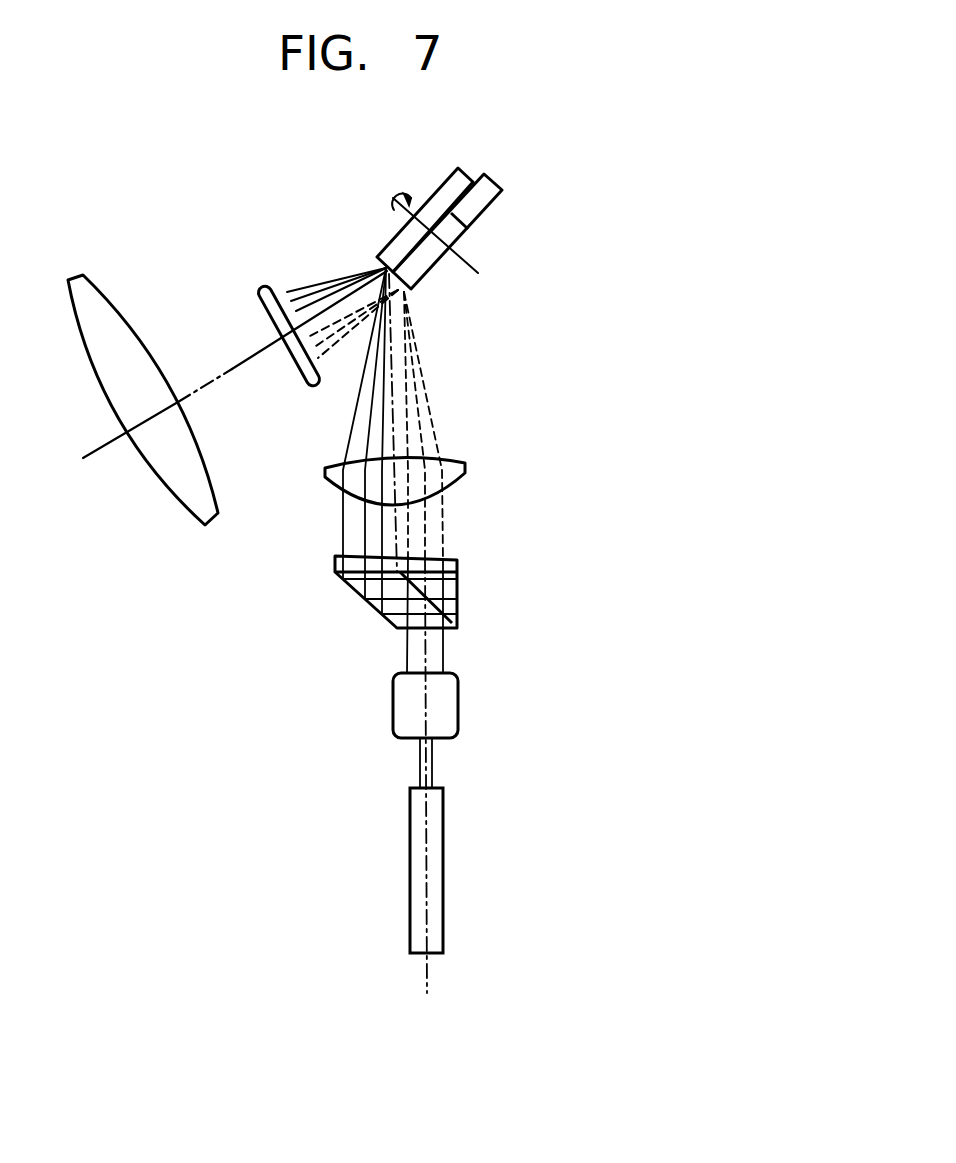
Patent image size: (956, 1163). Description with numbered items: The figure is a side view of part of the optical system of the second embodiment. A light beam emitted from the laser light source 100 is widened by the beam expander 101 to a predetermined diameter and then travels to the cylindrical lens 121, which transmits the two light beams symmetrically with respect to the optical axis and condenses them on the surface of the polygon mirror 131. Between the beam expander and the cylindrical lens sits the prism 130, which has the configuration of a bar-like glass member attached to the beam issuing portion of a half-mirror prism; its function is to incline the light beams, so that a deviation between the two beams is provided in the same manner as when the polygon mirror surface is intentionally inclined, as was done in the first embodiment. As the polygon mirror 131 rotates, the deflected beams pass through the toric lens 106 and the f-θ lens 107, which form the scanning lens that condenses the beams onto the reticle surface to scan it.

The laser light source 100 is at (435, 822).
The beam expander 101 is at (457, 703).
The toric lens 106 is at (263, 288).
The f-θ lens 107 is at (72, 280).
The cylindrical lens 121 is at (467, 467).
The prism 130 is at (458, 587).
The polygon mirror 131 is at (487, 193).